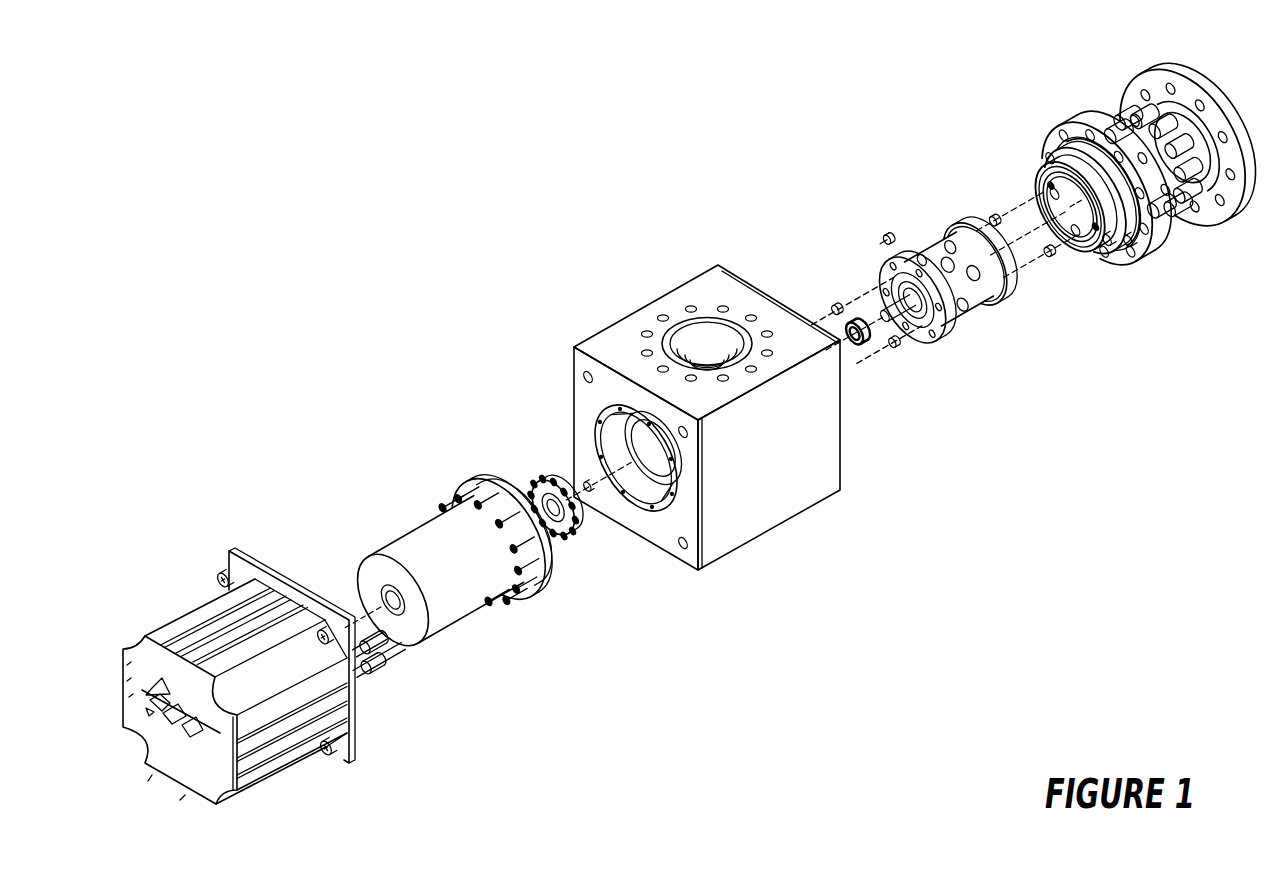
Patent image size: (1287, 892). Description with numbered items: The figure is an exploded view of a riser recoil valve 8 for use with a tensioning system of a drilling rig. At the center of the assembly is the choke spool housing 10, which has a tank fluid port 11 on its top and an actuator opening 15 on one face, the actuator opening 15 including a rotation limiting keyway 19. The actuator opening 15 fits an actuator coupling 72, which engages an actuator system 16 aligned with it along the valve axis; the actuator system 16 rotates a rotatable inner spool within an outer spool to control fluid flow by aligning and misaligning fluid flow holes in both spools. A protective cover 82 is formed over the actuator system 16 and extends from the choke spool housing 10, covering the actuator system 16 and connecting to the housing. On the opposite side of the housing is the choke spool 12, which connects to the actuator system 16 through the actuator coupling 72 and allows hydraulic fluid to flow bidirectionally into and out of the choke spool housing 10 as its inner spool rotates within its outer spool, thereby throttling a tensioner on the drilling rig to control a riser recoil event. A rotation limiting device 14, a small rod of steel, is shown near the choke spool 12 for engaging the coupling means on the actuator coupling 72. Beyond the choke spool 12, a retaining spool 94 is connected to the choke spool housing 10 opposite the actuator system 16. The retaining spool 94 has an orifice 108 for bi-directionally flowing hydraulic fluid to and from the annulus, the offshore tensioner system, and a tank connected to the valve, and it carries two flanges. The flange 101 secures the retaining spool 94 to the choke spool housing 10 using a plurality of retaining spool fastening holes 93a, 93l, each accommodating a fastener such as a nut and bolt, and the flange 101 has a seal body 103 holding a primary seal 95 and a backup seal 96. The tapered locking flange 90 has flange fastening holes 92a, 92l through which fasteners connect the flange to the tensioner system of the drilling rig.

The riser recoil valve 8 is at (222, 116).
The protective cover 82 is at (193, 617).
The actuator system 16 is at (437, 523).
The actuator coupling 72 is at (537, 488).
The choke spool housing 10 is at (618, 330).
The tank fluid port 11 is at (698, 312).
The actuator opening 15 is at (628, 492).
The rotation limiting keyway 19 is at (655, 452).
The choke spool 12 is at (935, 248).
The rotation limiting device 14 is at (884, 239).
The orifice 108 is at (1046, 208).
The primary seal 95 is at (1063, 158).
The seal body 103 is at (1082, 150).
The flange 101 is at (1100, 120).
The backup seal 96 is at (1123, 222).
The retaining spool fastening hole 93a is at (1107, 246).
The retaining spool fastening hole 93l is at (1128, 248).
The retaining spool 94 is at (1190, 256).
The flange fastening hole 92a is at (1186, 216).
The flange fastening hole 92l is at (1197, 214).
The tapered locking flange 90 is at (1163, 73).